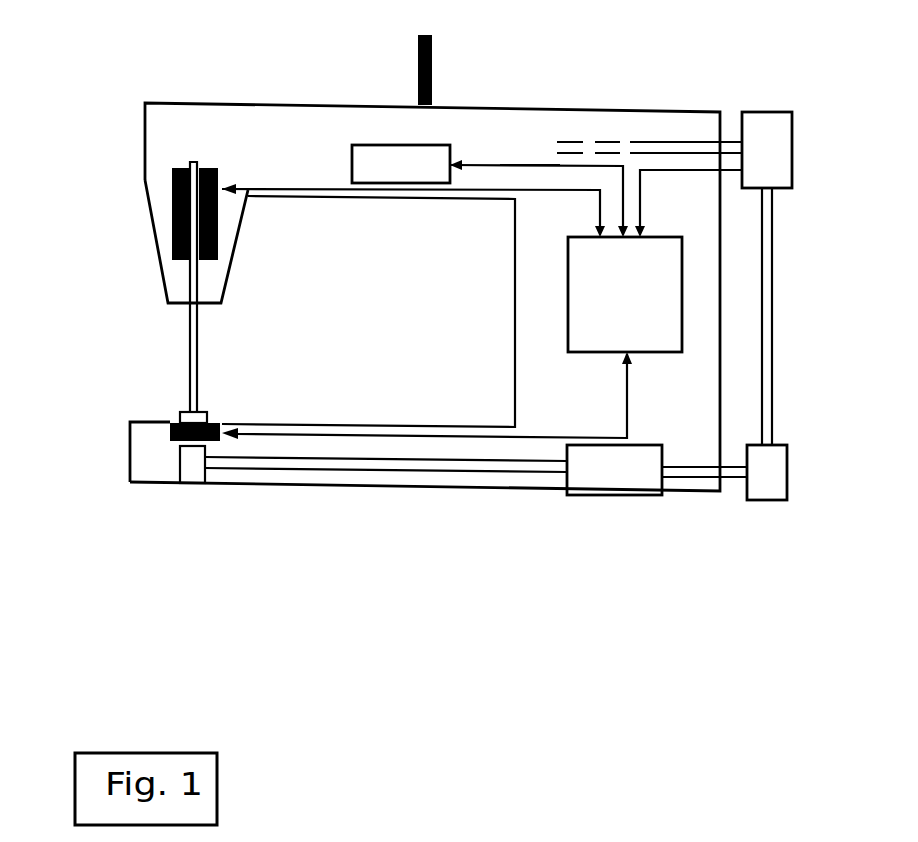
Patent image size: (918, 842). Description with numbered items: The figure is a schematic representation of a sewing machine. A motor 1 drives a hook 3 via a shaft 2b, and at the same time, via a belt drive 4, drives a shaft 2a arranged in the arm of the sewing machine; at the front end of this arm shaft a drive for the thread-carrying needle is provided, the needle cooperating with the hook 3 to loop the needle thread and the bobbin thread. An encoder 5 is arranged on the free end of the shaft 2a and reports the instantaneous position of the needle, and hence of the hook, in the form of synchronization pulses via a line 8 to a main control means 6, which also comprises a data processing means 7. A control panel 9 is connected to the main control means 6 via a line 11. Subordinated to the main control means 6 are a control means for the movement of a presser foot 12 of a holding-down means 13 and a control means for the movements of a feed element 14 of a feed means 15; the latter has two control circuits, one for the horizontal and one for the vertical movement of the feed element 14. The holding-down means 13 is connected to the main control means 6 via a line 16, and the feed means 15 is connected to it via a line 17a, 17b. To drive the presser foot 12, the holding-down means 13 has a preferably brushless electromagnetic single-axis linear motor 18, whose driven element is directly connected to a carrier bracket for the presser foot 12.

The motor 1 is at (634, 478).
The shaft 2a is at (650, 142).
The shaft 2b is at (452, 477).
The hook 3 is at (197, 470).
The belt drive 4 is at (772, 352).
The encoder 5 is at (775, 127).
The main control means 6 is at (625, 294).
The data processing means 7 is at (625, 294).
The line 8 is at (688, 173).
The control panel 9 is at (490, 190).
The line 11 is at (543, 165).
The presser foot 12 is at (200, 412).
The holding-down means 13 is at (145, 258).
The feed element 14 is at (175, 423).
The feed means 15 is at (160, 455).
The line 16 is at (492, 190).
The line 17a is at (427, 317).
The line 17b is at (388, 427).
The single-axis linear motor 18 is at (172, 207).